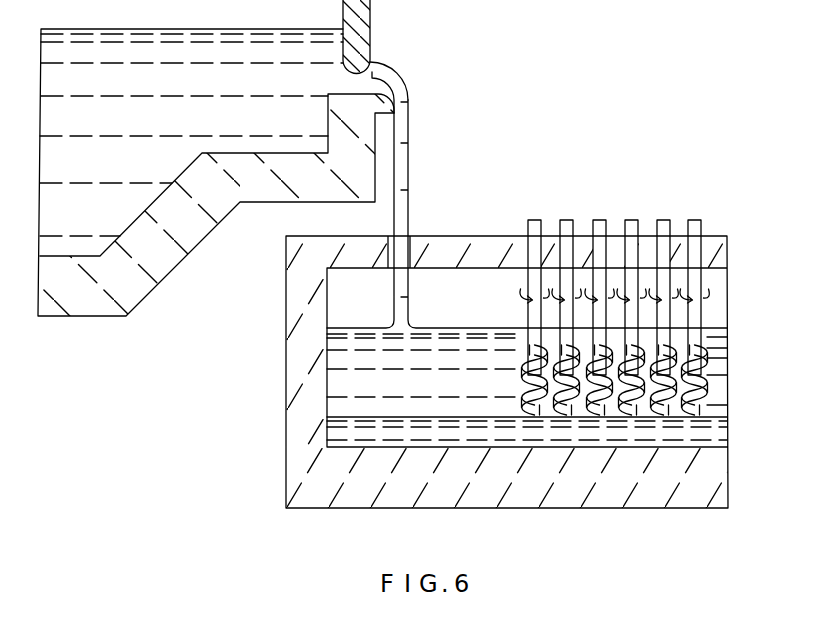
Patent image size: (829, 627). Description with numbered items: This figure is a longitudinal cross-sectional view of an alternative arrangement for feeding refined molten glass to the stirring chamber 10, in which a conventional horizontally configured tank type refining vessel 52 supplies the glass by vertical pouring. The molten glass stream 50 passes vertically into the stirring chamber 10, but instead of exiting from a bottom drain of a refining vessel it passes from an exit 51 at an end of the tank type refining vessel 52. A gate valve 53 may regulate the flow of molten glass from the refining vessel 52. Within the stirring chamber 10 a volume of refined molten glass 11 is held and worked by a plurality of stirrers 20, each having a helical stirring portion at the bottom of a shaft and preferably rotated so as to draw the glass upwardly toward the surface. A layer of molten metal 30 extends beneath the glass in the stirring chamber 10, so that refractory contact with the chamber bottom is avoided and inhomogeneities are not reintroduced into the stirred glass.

The stirring chamber 10 is at (485, 228).
The refined molten glass 11 is at (713, 329).
The stirrers 20 is at (657, 219).
The molten metal 30 is at (713, 420).
The molten glass stream 50 is at (409, 173).
The exit 51 is at (377, 84).
The tank type refining vessel 52 is at (157, 283).
The gate valve 53 is at (371, 24).